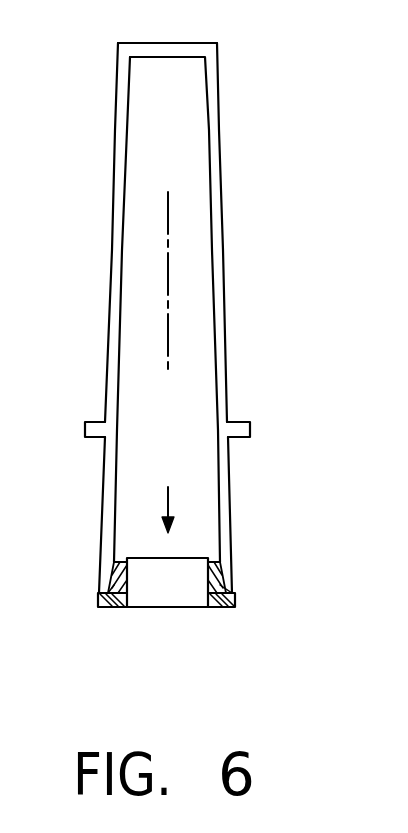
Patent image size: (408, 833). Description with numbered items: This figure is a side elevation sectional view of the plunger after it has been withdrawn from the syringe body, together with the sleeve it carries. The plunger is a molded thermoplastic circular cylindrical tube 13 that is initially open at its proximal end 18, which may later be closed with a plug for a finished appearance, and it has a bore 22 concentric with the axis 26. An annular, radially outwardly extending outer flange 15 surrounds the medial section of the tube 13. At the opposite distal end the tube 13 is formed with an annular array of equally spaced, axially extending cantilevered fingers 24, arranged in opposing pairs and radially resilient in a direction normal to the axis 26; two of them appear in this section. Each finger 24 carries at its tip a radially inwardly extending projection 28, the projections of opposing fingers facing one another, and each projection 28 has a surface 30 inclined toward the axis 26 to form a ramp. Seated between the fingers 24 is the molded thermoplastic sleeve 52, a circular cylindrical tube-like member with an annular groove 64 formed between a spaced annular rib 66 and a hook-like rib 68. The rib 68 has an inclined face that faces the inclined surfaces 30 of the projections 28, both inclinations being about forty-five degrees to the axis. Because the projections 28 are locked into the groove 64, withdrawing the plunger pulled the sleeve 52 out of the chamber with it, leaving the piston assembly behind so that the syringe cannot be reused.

The circular cylindrical tube 13 is at (216, 155).
The proximal end 18 is at (185, 43).
The bore 22 is at (167, 97).
The axis 26 is at (172, 273).
The outer flange 15 is at (243, 423).
The cantilevered fingers 24 is at (103, 483).
The sleeve 52 is at (170, 490).
The inclined surface 30 is at (215, 609).
The annular rib 66 is at (128, 609).
The projection 28 is at (107, 590).
The annular groove 64 is at (107, 597).
The hook-like rib 68 is at (217, 580).